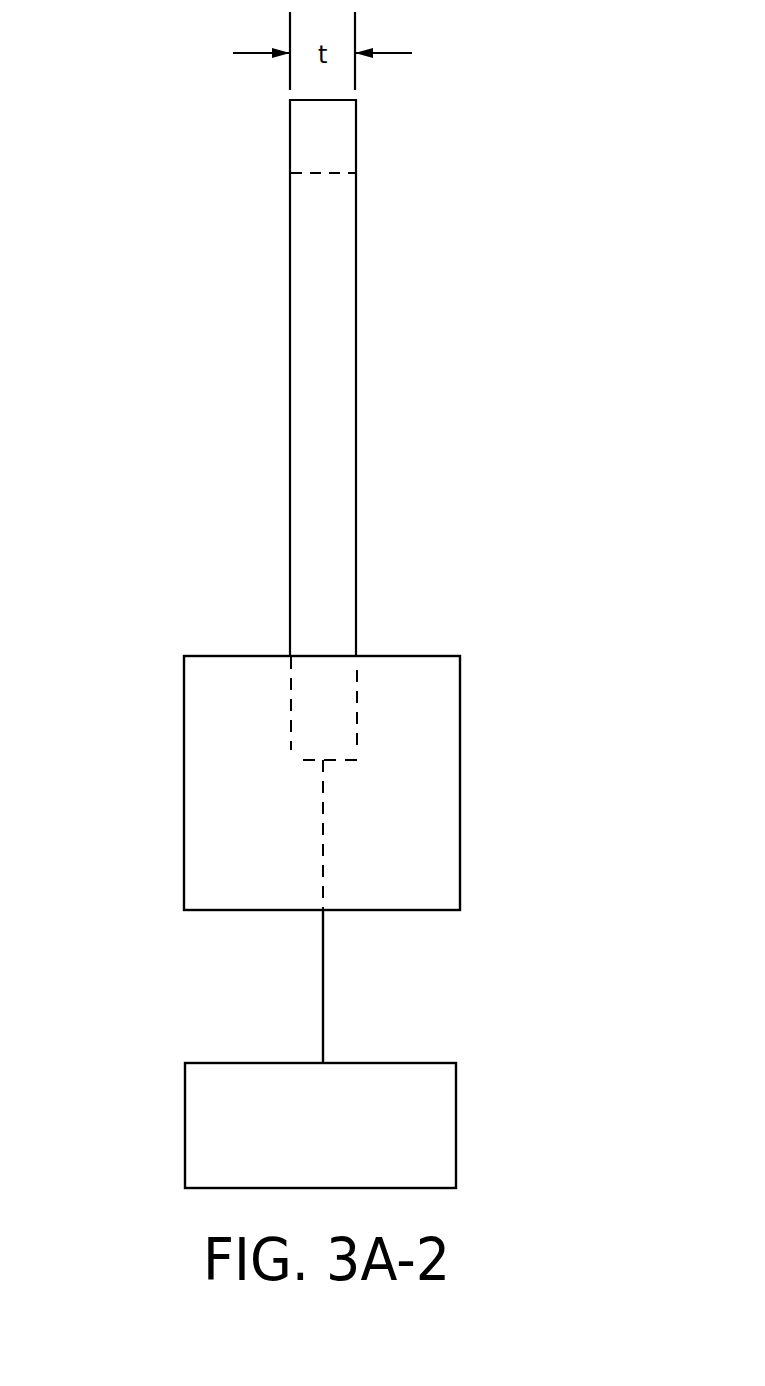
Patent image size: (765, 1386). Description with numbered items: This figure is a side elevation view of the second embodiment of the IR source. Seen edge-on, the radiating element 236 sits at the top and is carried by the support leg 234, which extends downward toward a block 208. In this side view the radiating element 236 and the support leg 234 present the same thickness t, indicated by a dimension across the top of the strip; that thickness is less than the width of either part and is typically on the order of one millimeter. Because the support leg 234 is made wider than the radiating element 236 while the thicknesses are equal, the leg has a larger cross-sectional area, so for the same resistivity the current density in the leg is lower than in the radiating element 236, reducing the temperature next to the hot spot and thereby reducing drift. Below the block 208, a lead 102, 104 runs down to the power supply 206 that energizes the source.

The radiating element 236 is at (290, 135).
The support leg 234 is at (290, 400).
The handle 208 is at (184, 790).
The power lead 102 is at (323, 993).
The power lead 104 is at (323, 993).
The power supply 206 is at (185, 1126).